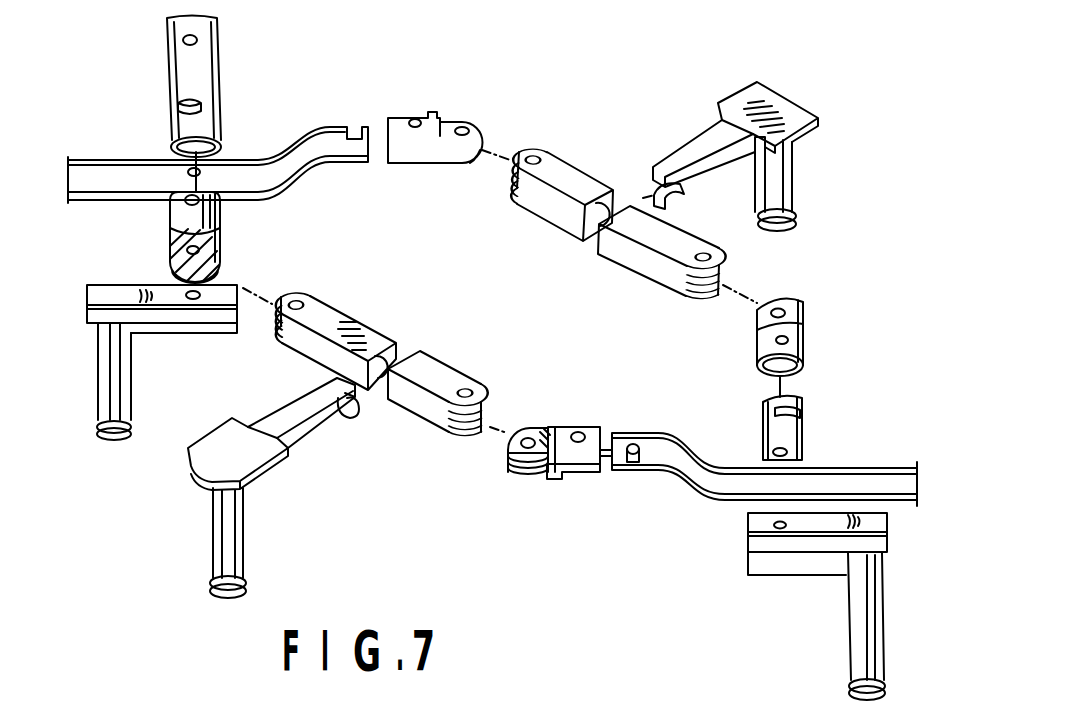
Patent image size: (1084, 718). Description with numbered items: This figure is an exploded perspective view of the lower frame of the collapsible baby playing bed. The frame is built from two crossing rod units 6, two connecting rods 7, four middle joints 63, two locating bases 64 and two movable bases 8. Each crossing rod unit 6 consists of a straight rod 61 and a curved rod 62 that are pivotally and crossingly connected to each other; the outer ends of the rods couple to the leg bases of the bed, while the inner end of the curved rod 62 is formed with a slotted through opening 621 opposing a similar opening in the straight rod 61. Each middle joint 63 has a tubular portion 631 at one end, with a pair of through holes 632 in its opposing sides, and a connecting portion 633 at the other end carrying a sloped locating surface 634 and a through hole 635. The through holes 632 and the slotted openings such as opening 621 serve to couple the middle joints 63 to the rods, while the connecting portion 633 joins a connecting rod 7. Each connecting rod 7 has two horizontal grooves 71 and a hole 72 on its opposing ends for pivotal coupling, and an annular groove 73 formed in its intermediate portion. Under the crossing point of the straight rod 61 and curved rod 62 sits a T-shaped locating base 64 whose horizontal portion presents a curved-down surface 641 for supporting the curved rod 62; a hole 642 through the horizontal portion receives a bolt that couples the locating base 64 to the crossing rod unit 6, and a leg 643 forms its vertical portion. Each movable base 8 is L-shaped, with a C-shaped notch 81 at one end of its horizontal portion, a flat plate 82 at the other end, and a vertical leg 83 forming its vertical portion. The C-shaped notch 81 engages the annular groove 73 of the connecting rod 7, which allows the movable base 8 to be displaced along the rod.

The crossing rod unit 6 is at (347, 47).
The straight rod 61 is at (219, 78).
The curved rod 62 is at (322, 124).
The slotted through opening 621 is at (633, 464).
The middle joint 63 is at (398, 113).
The tubular portion 631 is at (790, 372).
The through hole 632 is at (785, 340).
The connecting portion 633 is at (558, 480).
The sloped locating surface 634 is at (510, 455).
The through hole 635 is at (782, 313).
The locating base 64 is at (777, 644).
The curved-down surface 641 is at (880, 523).
The hole 642 is at (780, 528).
The leg 643 is at (863, 607).
The connecting rod 7 is at (625, 276).
The horizontal groove 71 is at (682, 278).
The hole 72 is at (705, 252).
The annular groove 73 is at (590, 241).
The movable base 8 is at (672, 135).
The C-shaped notch 81 is at (683, 193).
The flat plate 82 is at (788, 104).
The vertical leg 83 is at (790, 168).